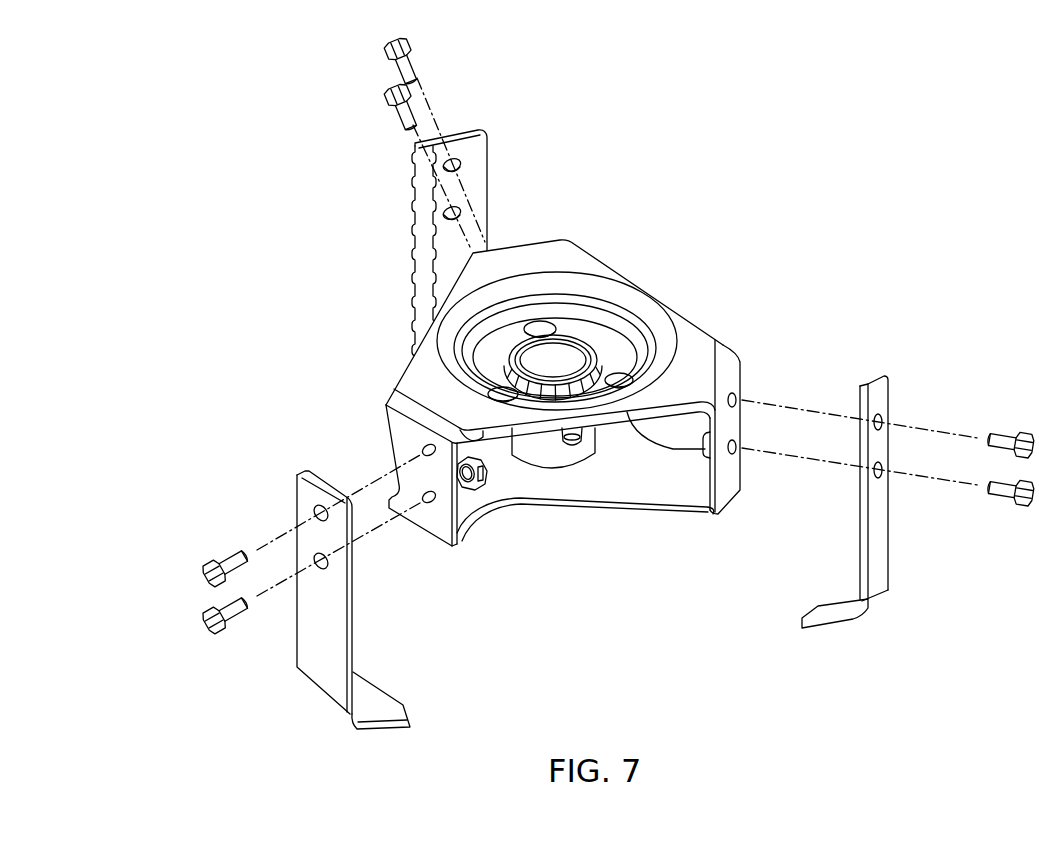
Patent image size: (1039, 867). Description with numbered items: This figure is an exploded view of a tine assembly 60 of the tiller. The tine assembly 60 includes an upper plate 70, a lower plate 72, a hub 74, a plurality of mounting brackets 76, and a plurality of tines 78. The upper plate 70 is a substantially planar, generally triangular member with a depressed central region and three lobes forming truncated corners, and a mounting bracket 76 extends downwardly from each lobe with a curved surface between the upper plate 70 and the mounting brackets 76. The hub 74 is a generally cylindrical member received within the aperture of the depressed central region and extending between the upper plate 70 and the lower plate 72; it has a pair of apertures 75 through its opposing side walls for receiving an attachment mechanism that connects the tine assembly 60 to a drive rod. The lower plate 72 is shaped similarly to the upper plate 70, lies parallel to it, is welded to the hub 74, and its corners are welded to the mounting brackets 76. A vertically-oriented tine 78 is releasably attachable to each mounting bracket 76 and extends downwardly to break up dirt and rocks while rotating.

The tine assembly 60 is at (757, 170).
The upper plate 70 is at (571, 262).
The lower plate 72 is at (640, 483).
The hub 74 is at (543, 453).
The aperture 75 is at (573, 444).
The mounting bracket 76 is at (407, 432).
The tine 78 is at (475, 182).